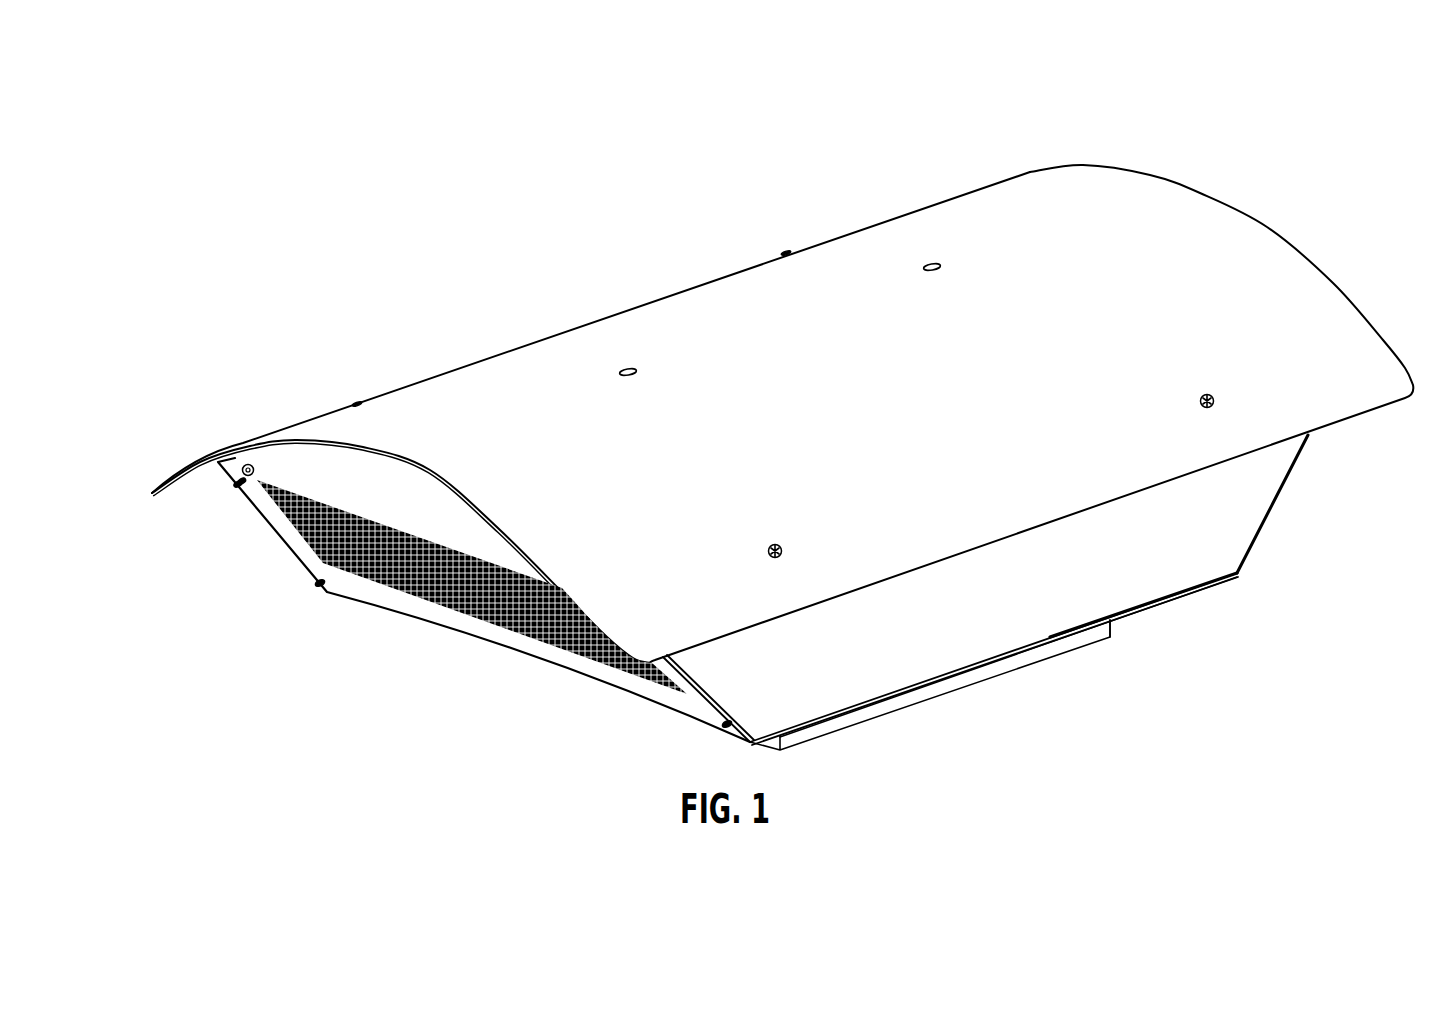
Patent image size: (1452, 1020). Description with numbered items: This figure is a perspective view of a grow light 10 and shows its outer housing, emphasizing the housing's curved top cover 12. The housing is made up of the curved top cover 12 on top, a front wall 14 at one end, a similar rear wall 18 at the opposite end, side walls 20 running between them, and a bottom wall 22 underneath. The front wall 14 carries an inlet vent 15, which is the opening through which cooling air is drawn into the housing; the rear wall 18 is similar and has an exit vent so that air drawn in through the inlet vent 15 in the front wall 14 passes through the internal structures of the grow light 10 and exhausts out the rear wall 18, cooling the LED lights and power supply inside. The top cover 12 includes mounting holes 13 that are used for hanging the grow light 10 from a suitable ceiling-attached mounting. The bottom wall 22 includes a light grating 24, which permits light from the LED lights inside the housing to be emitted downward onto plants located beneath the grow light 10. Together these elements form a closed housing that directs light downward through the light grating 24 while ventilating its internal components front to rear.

The grow light 10 is at (458, 163).
The curved top cover 12 is at (772, 298).
The mounting holes 13 is at (957, 272).
The front wall 14 is at (403, 624).
The inlet vent 15 is at (307, 543).
The rear wall 18 is at (1326, 498).
The side walls 20 is at (1057, 606).
The bottom wall 22 is at (1212, 597).
The light grating 24 is at (950, 692).